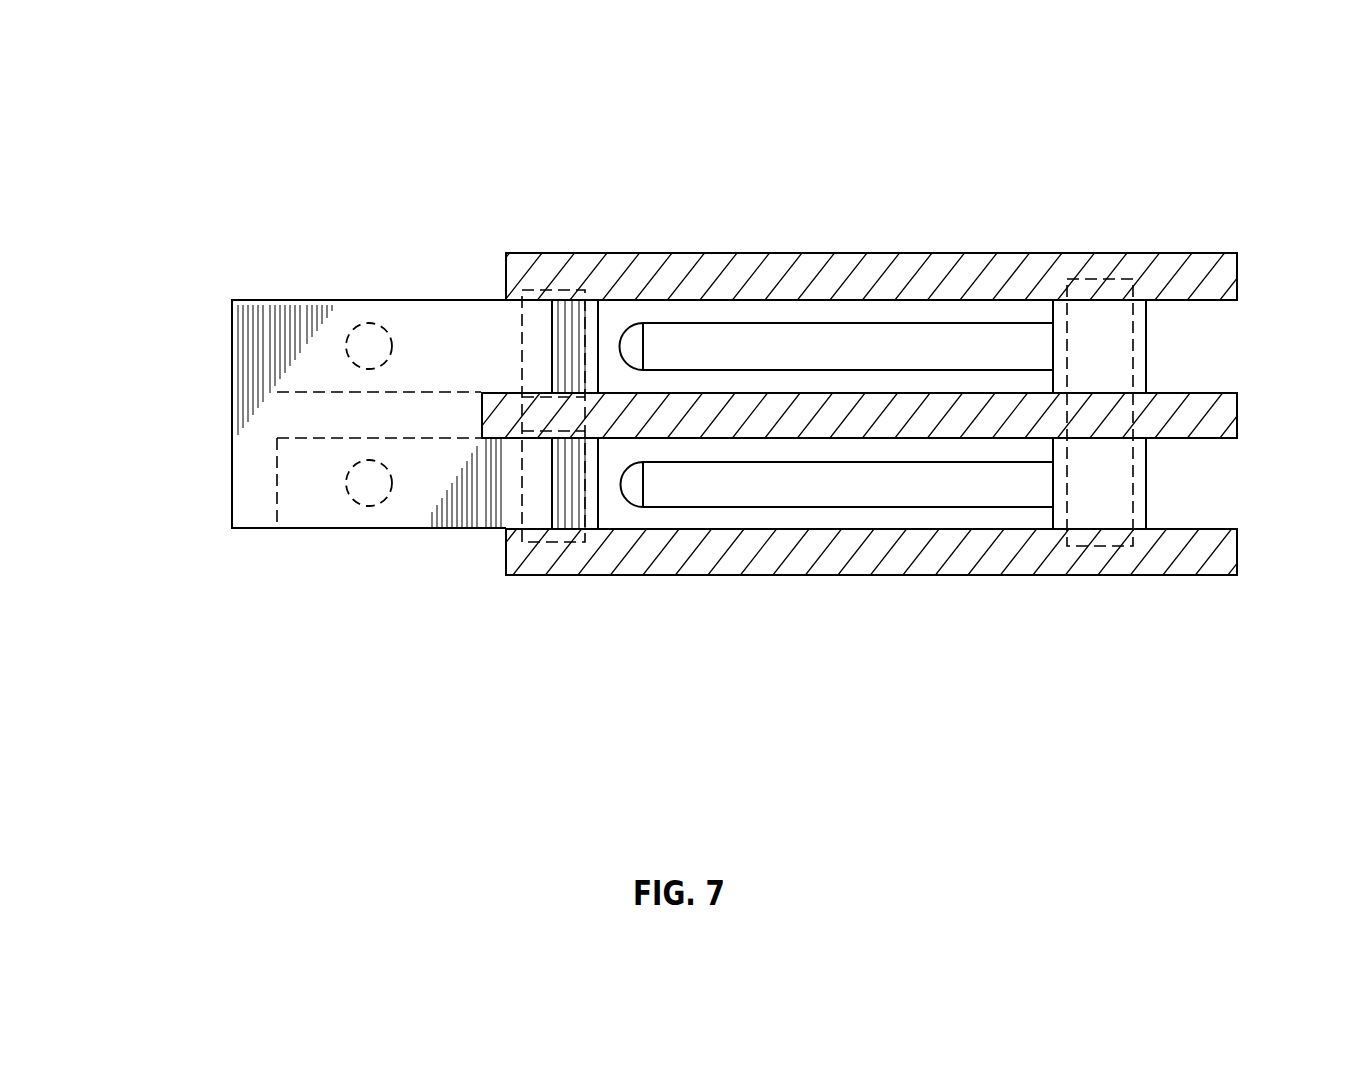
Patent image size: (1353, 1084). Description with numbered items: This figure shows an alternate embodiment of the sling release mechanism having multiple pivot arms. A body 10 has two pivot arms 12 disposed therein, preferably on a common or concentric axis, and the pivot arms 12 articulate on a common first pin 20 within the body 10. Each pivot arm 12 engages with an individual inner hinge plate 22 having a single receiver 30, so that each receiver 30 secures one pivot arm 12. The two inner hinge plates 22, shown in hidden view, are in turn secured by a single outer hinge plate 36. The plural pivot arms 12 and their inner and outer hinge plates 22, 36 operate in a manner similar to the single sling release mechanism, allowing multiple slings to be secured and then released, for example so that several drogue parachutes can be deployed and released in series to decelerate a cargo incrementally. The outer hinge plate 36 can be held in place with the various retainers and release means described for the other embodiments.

The body 10 is at (930, 277).
The pivot arm 12 is at (815, 340).
The first pin 20 is at (1103, 367).
The inner hinge plate 22 is at (317, 366).
The receiver 30 is at (367, 345).
The outer hinge plate 36 is at (243, 480).